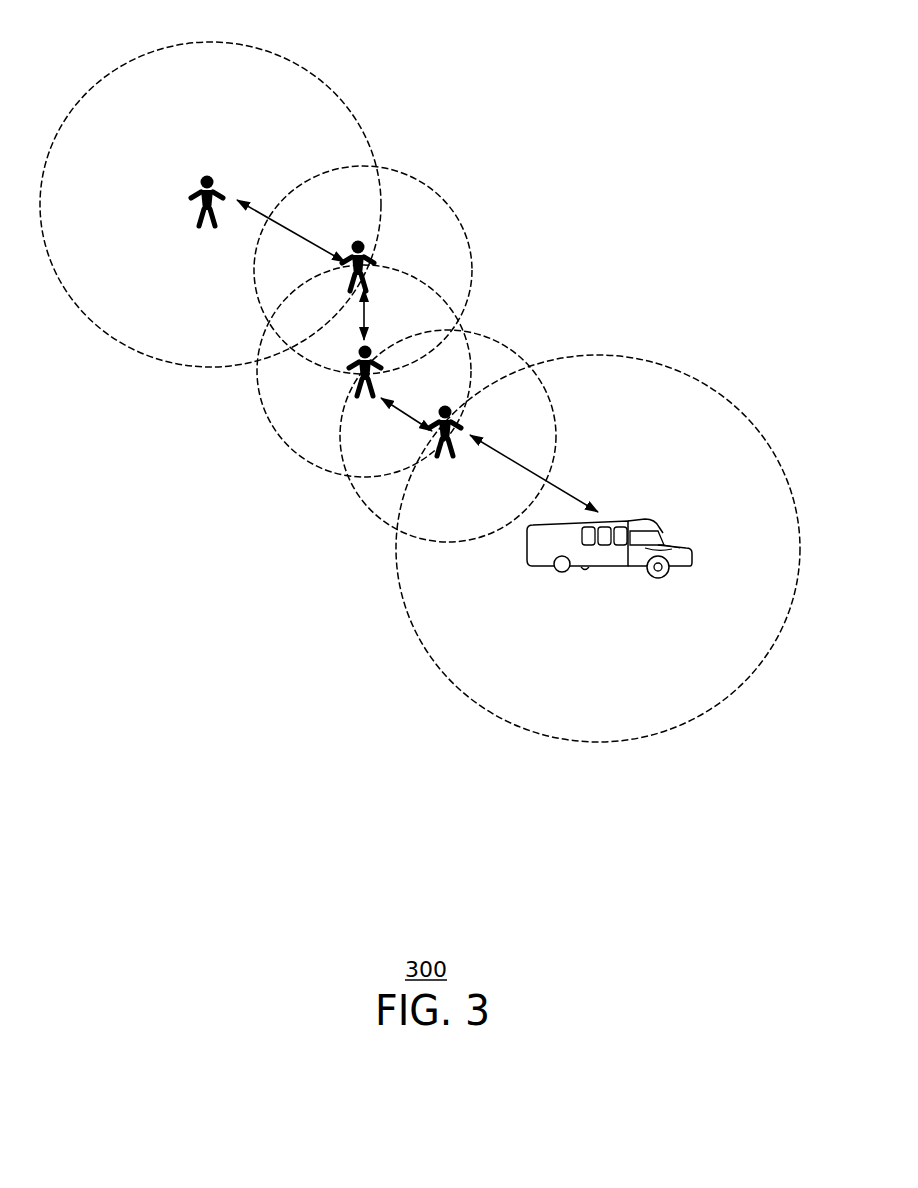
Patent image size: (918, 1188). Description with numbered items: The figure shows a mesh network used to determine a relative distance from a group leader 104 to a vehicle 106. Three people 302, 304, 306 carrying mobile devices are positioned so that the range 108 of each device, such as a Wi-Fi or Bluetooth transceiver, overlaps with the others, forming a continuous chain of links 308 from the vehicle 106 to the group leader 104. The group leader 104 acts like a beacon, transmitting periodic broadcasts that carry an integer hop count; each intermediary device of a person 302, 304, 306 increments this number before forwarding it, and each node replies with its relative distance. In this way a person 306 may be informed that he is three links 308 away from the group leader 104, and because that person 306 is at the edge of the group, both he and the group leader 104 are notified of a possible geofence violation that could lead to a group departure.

The group leader 104 is at (207, 175).
The vehicle 106 is at (645, 520).
The range 108 is at (297, 62).
The person 302 is at (369, 260).
The person 304 is at (354, 394).
The person 306 is at (452, 455).
The links 308 is at (288, 230).